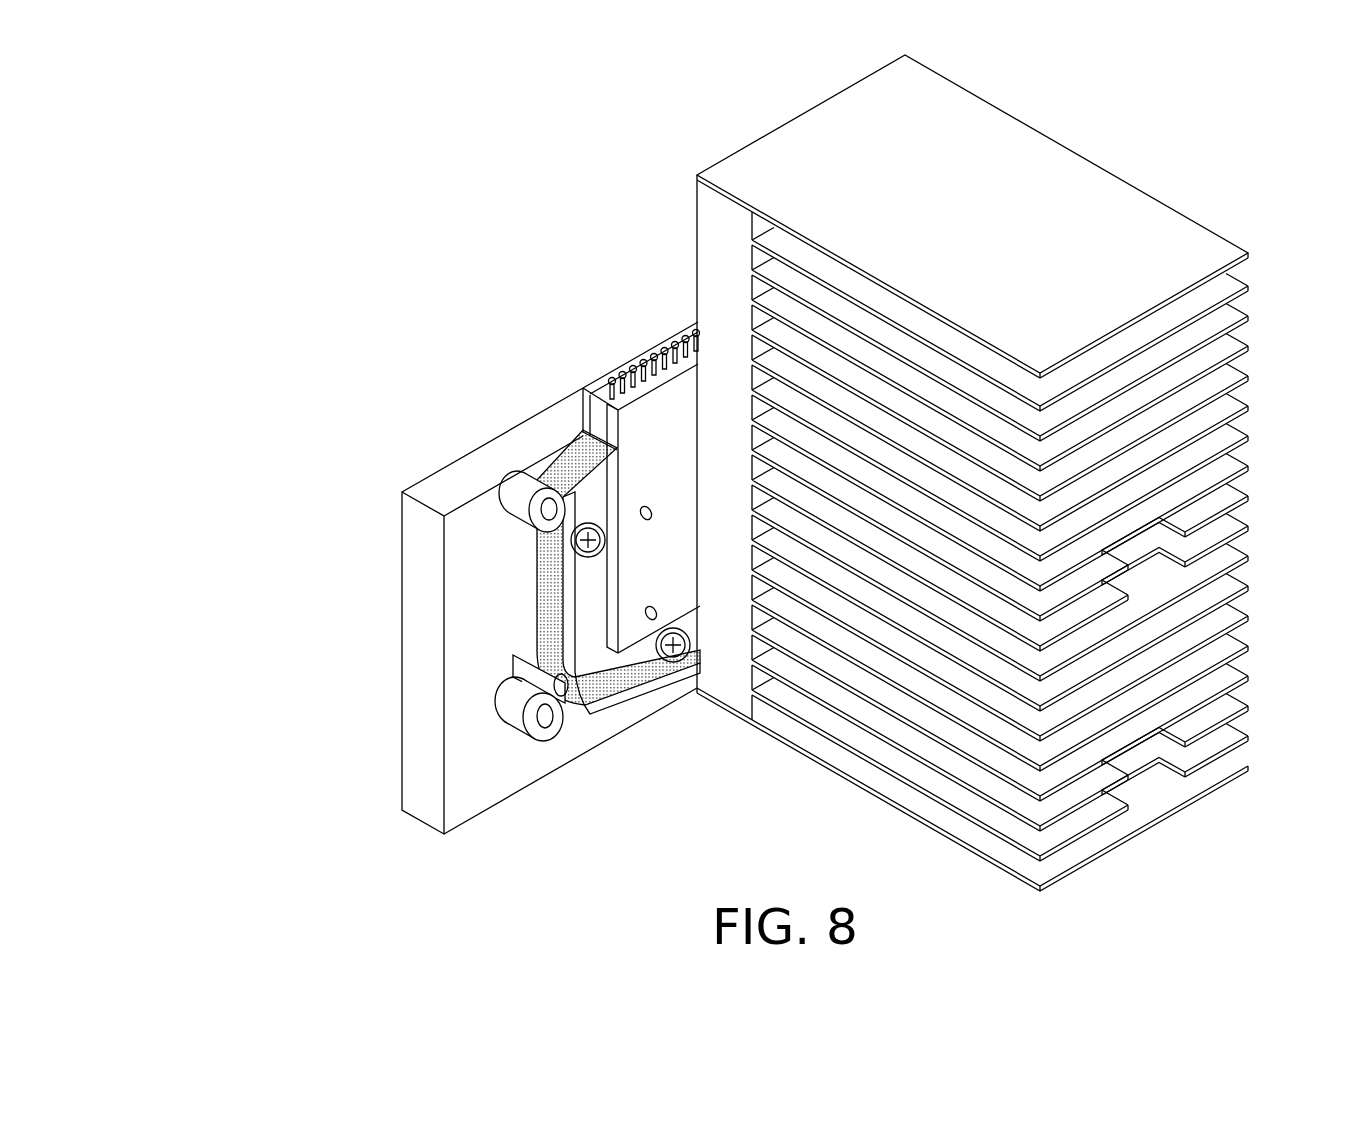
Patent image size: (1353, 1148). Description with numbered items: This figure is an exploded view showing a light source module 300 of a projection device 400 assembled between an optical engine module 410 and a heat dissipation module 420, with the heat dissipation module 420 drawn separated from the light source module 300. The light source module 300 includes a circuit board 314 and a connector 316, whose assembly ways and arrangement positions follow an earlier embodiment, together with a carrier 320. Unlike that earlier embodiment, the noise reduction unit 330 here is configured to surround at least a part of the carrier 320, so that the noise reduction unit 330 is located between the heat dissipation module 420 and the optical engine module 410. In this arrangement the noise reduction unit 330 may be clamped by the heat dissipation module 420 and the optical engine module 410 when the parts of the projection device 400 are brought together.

The light source module 300 is at (331, 86).
The circuit board 314 is at (668, 410).
The connector 316 is at (595, 406).
The carrier 320 is at (612, 676).
The noise reduction unit 330 is at (616, 712).
The projection device 400 is at (206, 101).
The optical engine module 410 is at (418, 738).
The heat dissipation module 420 is at (728, 688).